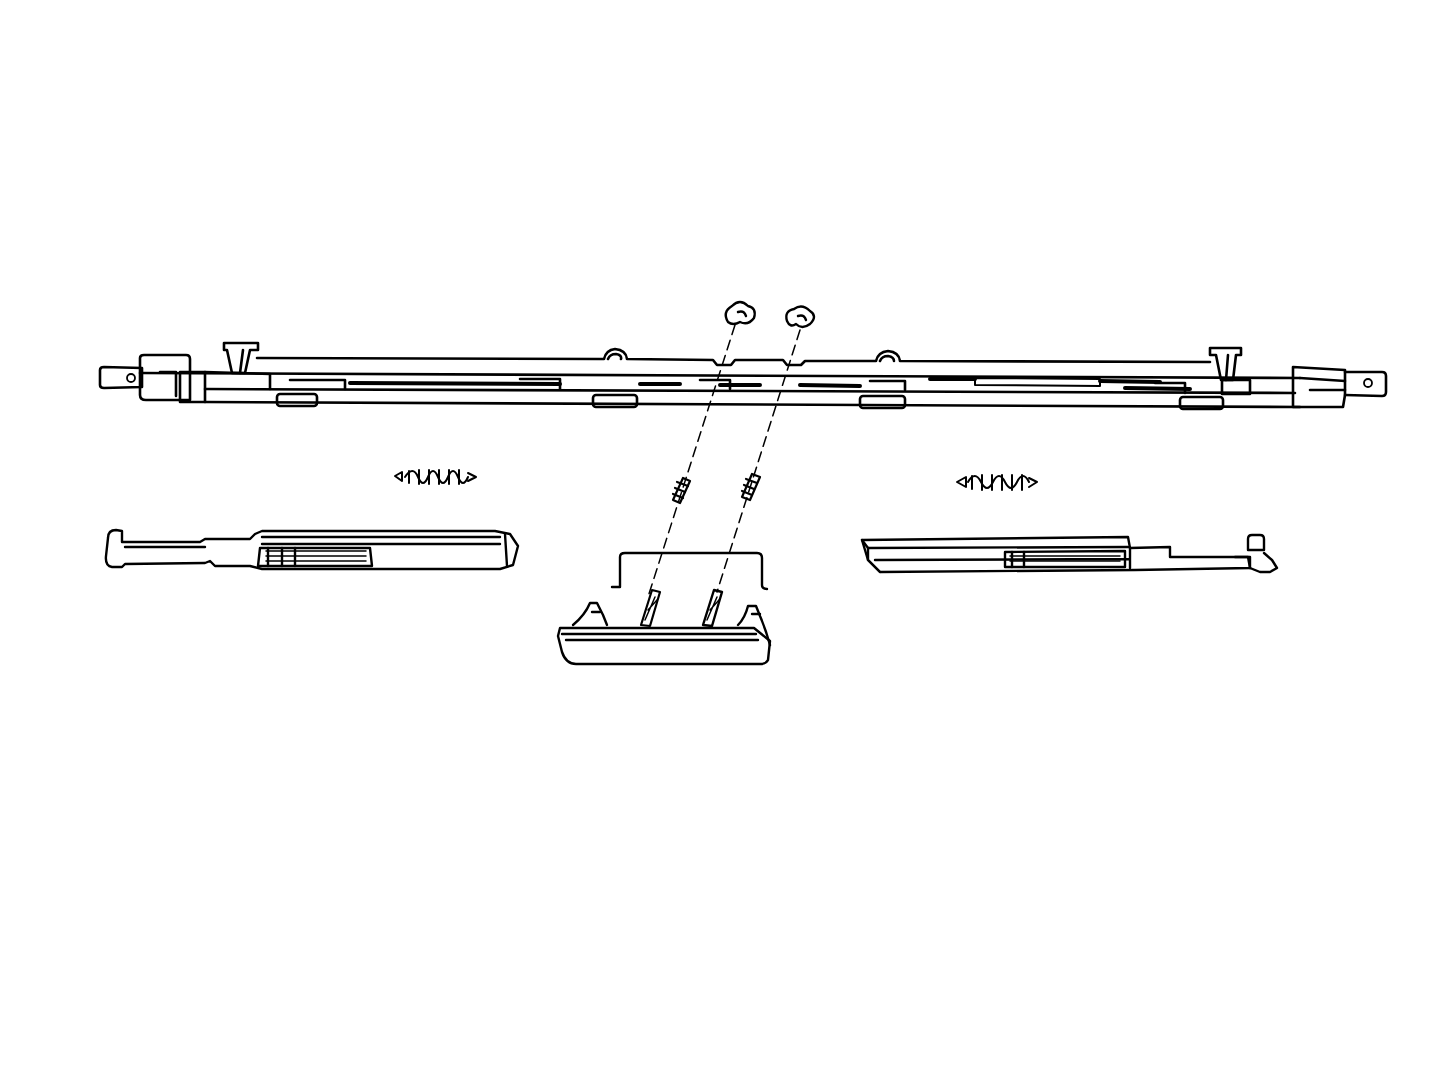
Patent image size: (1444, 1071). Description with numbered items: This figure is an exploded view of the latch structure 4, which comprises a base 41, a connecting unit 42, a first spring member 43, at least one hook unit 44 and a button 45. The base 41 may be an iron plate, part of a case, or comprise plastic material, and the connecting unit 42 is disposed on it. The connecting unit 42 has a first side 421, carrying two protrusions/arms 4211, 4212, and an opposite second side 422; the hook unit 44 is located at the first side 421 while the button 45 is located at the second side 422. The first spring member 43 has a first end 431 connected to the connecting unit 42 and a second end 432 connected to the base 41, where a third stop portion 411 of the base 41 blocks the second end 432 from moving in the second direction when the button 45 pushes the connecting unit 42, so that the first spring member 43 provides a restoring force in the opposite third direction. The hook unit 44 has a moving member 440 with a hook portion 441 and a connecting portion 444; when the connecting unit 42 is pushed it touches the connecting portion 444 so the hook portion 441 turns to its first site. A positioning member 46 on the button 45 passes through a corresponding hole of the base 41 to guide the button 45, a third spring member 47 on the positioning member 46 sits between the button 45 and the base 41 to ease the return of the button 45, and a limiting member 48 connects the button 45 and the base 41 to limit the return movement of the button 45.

The latch structure 4 is at (129, 146).
The base 41 is at (767, 438).
The third stop portion 411 is at (996, 375).
The connecting unit 42 is at (1223, 563).
The first side 421 is at (1273, 572).
The protrusion/arm 4211 is at (1265, 534).
The protrusion/arm 4212 is at (1279, 562).
The second side 422 is at (868, 558).
The first spring member 43 is at (1010, 478).
The first end 431 is at (1037, 487).
The second end 432 is at (955, 480).
The hook unit 44 is at (1275, 354).
The moving member 440 is at (1314, 138).
The hook portion 441 is at (1232, 356).
The connecting portion 444 is at (1236, 387).
The button 45 is at (720, 650).
The positioning member 46 is at (648, 585).
The third spring member 47 is at (760, 488).
The limiting member 48 is at (770, 590).